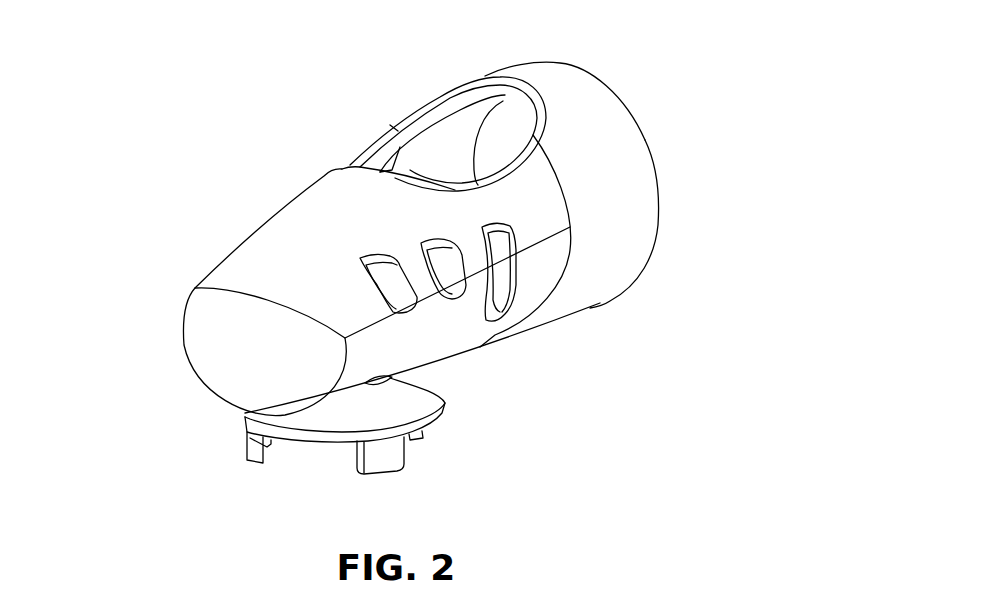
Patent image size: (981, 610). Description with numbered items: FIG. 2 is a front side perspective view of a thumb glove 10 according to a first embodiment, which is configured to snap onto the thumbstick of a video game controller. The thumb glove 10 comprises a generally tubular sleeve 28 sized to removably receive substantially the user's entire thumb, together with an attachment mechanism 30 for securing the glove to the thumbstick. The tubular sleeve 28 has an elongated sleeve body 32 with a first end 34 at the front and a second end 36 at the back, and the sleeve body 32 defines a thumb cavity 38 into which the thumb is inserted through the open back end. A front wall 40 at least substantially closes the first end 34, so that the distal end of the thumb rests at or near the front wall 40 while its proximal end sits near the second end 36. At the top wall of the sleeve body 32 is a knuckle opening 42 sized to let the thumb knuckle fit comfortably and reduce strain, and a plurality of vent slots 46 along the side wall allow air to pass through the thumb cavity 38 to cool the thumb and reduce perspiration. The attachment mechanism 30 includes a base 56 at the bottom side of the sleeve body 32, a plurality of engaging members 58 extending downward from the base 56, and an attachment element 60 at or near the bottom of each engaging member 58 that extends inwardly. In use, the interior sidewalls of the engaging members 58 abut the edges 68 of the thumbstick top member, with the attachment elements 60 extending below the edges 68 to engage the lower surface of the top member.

The thumb glove 10 is at (220, 146).
The tubular sleeve 28 is at (598, 113).
The attachment mechanism 30 is at (452, 446).
The sleeve body 32 is at (318, 207).
The first end 34 is at (156, 299).
The second end 36 is at (637, 317).
The thumb cavity 38 is at (666, 148).
The front wall 40 is at (233, 352).
The knuckle opening 42 is at (435, 131).
The vent slots 46 is at (500, 288).
The base 56 is at (415, 396).
The engaging members 58 is at (383, 463).
The attachment element 60 is at (263, 457).
The edges 68 is at (327, 435).